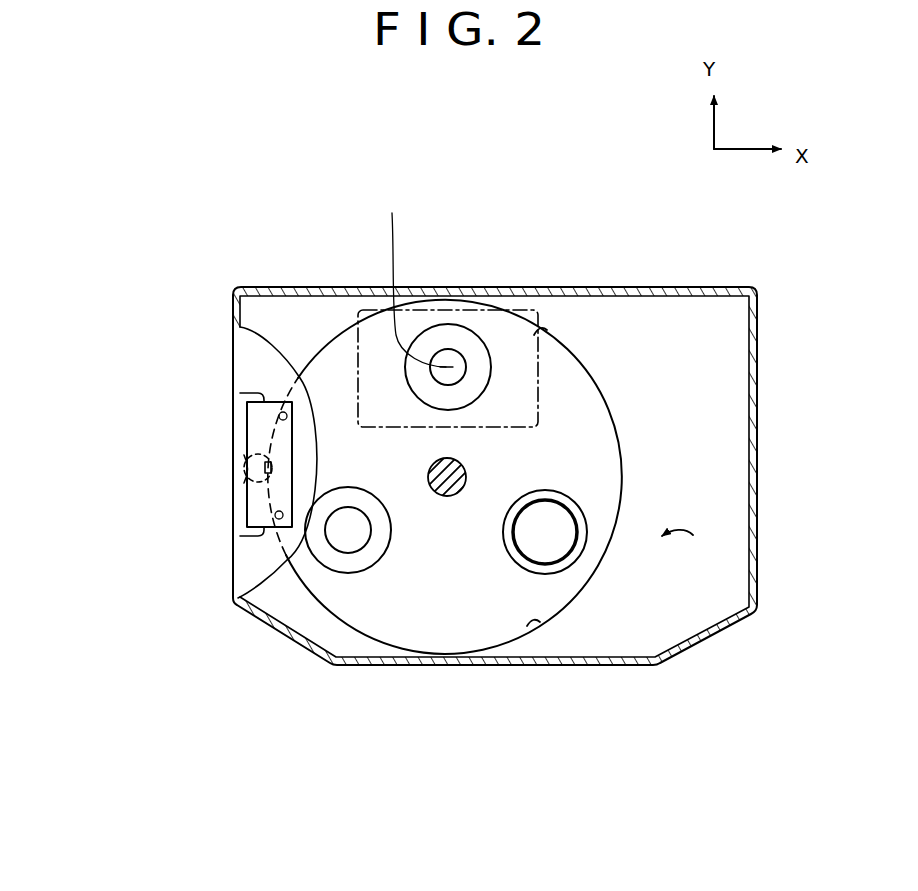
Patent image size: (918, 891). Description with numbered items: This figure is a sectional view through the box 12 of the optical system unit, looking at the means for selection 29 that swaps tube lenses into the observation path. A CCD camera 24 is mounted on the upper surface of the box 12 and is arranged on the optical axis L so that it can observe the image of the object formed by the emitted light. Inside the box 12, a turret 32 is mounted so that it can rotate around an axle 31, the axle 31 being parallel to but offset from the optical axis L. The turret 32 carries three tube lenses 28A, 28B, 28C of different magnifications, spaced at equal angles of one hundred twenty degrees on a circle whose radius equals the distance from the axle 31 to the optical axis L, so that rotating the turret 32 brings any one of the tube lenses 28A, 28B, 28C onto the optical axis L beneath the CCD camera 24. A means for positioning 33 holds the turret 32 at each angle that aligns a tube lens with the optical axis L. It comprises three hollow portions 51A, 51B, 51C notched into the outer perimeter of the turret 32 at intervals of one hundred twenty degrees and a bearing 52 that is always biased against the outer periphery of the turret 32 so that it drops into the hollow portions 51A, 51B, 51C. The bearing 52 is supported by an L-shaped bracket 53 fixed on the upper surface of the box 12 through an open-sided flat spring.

The box 12 is at (335, 658).
The CCD camera 24 is at (354, 340).
The tube lens 28A is at (556, 548).
The tube lens 28B is at (365, 545).
The tube lens 28C is at (468, 345).
The means for selection 29 is at (775, 560).
The axle 31 is at (447, 497).
The turret 32 is at (615, 436).
The means for positioning 33 is at (192, 411).
The hollow portion 51A is at (544, 333).
The hollow portion 51B is at (540, 628).
The hollow portion 51C is at (233, 512).
The bearing 52 is at (243, 468).
The L-shaped bracket 53 is at (255, 433).
The optical axis L is at (415, 277).